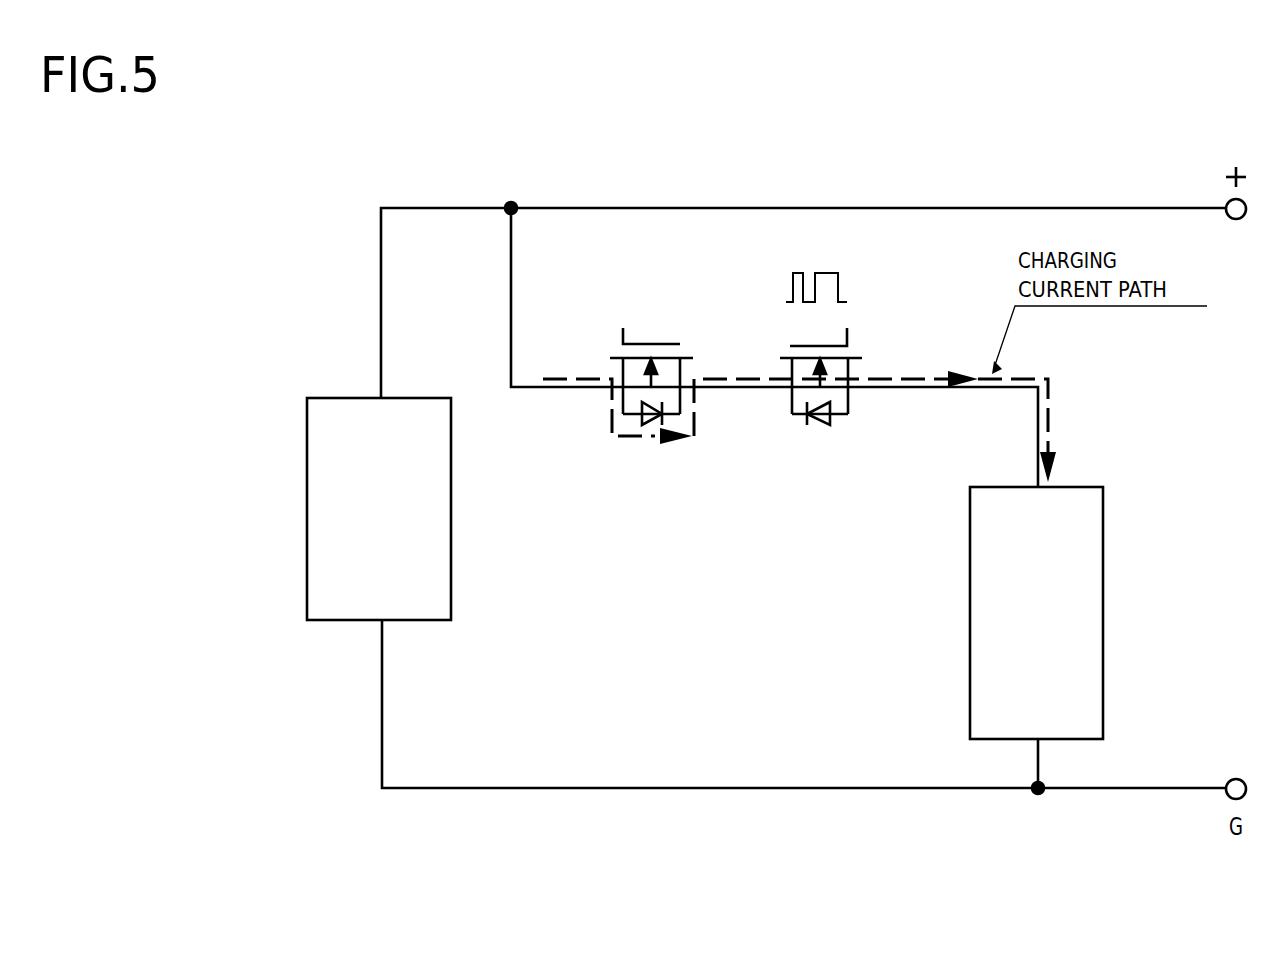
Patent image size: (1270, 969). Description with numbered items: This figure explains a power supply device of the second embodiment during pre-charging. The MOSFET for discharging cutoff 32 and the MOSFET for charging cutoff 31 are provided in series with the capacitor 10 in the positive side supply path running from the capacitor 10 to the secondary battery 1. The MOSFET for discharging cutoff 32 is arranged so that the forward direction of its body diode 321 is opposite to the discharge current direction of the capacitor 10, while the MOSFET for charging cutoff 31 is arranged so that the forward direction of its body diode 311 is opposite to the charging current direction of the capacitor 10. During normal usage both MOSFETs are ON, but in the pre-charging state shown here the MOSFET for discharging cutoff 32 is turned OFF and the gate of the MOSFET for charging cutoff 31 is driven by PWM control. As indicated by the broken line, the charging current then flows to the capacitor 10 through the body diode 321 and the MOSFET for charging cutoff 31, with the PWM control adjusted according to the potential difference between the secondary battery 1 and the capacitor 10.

The secondary battery 1 is at (352, 620).
The capacitor 10 is at (1103, 615).
The MOSFET for charging cutoff 31 is at (857, 404).
The MOSFET for discharging cutoff 32 is at (656, 397).
The body diode 311 is at (813, 430).
The body diode 321 is at (642, 437).